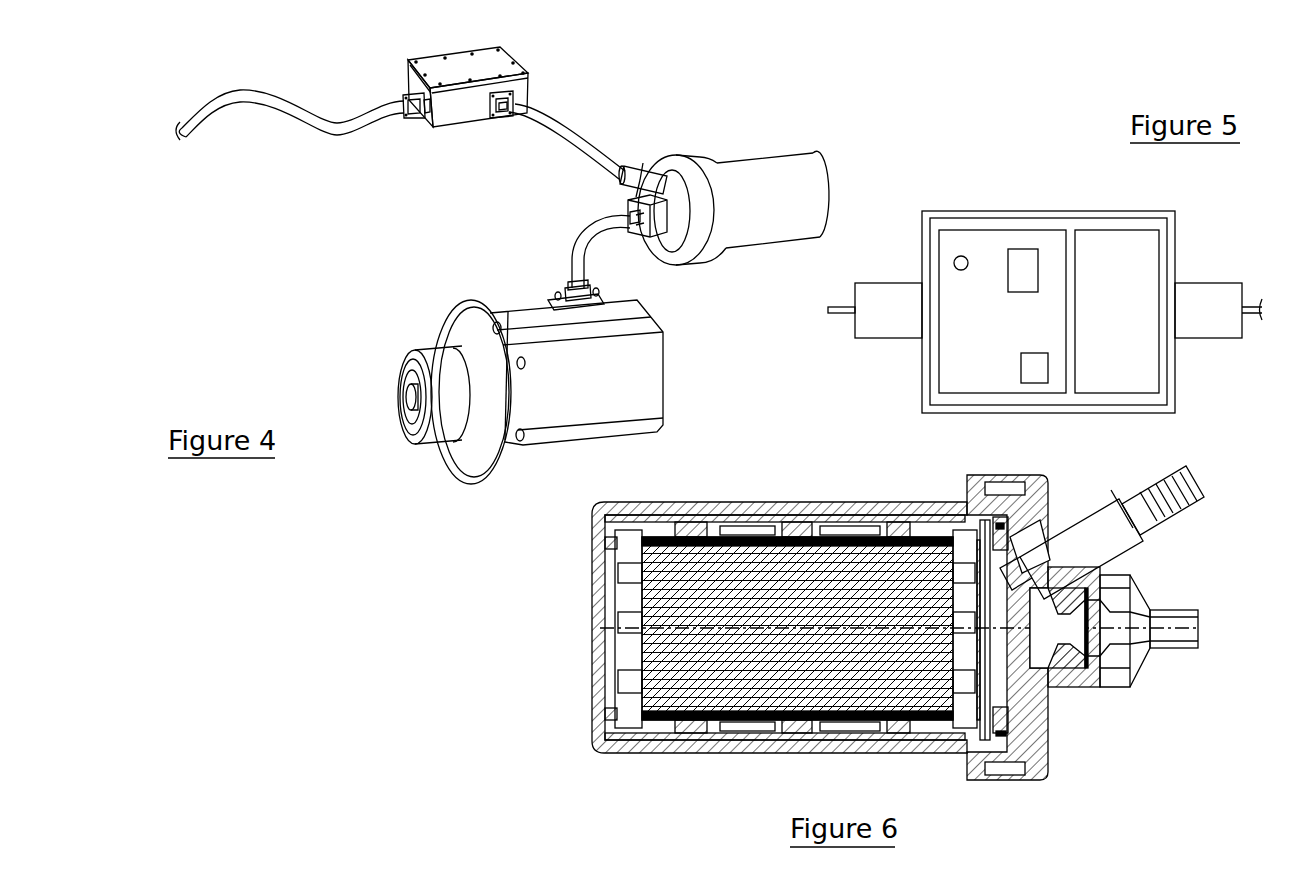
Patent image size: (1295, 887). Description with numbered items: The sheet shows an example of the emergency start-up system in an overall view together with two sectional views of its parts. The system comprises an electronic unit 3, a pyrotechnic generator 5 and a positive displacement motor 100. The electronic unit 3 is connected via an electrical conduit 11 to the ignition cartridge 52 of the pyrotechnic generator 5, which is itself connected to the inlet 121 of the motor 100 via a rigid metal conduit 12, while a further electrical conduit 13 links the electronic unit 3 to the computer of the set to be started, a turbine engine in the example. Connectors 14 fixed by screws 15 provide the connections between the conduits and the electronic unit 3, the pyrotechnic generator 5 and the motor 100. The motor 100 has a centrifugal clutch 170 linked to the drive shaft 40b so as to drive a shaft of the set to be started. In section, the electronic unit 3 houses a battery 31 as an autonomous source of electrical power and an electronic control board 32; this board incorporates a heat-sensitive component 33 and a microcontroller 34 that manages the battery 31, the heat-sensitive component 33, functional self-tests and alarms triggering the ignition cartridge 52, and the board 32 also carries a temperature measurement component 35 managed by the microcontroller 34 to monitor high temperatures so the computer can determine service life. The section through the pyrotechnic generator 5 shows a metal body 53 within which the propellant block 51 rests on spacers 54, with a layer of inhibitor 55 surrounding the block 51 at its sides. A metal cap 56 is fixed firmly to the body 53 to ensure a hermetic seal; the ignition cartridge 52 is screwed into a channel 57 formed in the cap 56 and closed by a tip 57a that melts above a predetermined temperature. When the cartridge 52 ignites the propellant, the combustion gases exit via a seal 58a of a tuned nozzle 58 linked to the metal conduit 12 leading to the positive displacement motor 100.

In FIG. 4, the electronic unit 3 is at (527, 64).
In FIG. 5, the electronic unit 3 is at (1196, 223).
In FIG. 4, the pyrotechnic generator 5 is at (757, 153).
In FIG. 4, the electrical conduit 11 is at (562, 146).
In FIG. 5, the electrical conduit 11 is at (1250, 300).
In FIG. 4, the rigid metal conduit 12 is at (582, 241).
In FIG. 6, the rigid metal conduit 12 is at (1178, 612).
In FIG. 4, the electrical conduit 13 is at (338, 125).
In FIG. 5, the electrical conduit 13 is at (842, 313).
In FIG. 4, the connectors 14 is at (515, 99).
In FIG. 5, the connectors 14 is at (889, 293).
In FIG. 4, the screws 15 is at (422, 118).
In FIG. 5, the battery 31 is at (1148, 353).
In FIG. 5, the electronic control board 32 is at (958, 342).
In FIG. 5, the heat-sensitive component 33 is at (961, 257).
In FIG. 5, the microcontroller 34 is at (1026, 262).
In FIG. 5, the temperature measurement component 35 is at (1025, 362).
In FIG. 4, the drive shaft 40b is at (410, 400).
In FIG. 6, the propellant block 51 is at (848, 597).
In FIG. 4, the ignition cartridge 52 is at (651, 167).
In FIG. 6, the ignition cartridge 52 is at (1110, 541).
In FIG. 6, the metal body 53 is at (775, 752).
In FIG. 6, the spacers 54 is at (812, 735).
In FIG. 6, the layer of inhibitor 55 is at (762, 532).
In FIG. 6, the metal cap 56 is at (1087, 695).
In FIG. 6, the channel 57 is at (1042, 506).
In FIG. 6, the tip 57a is at (1006, 515).
In FIG. 6, the tuned nozzle 58 is at (1113, 682).
In FIG. 6, the seal 58a is at (1090, 630).
In FIG. 4, the positive displacement motor 100 is at (476, 291).
In FIG. 4, the inlet 121 is at (566, 284).
In FIG. 4, the centrifugal clutch 170 is at (427, 352).